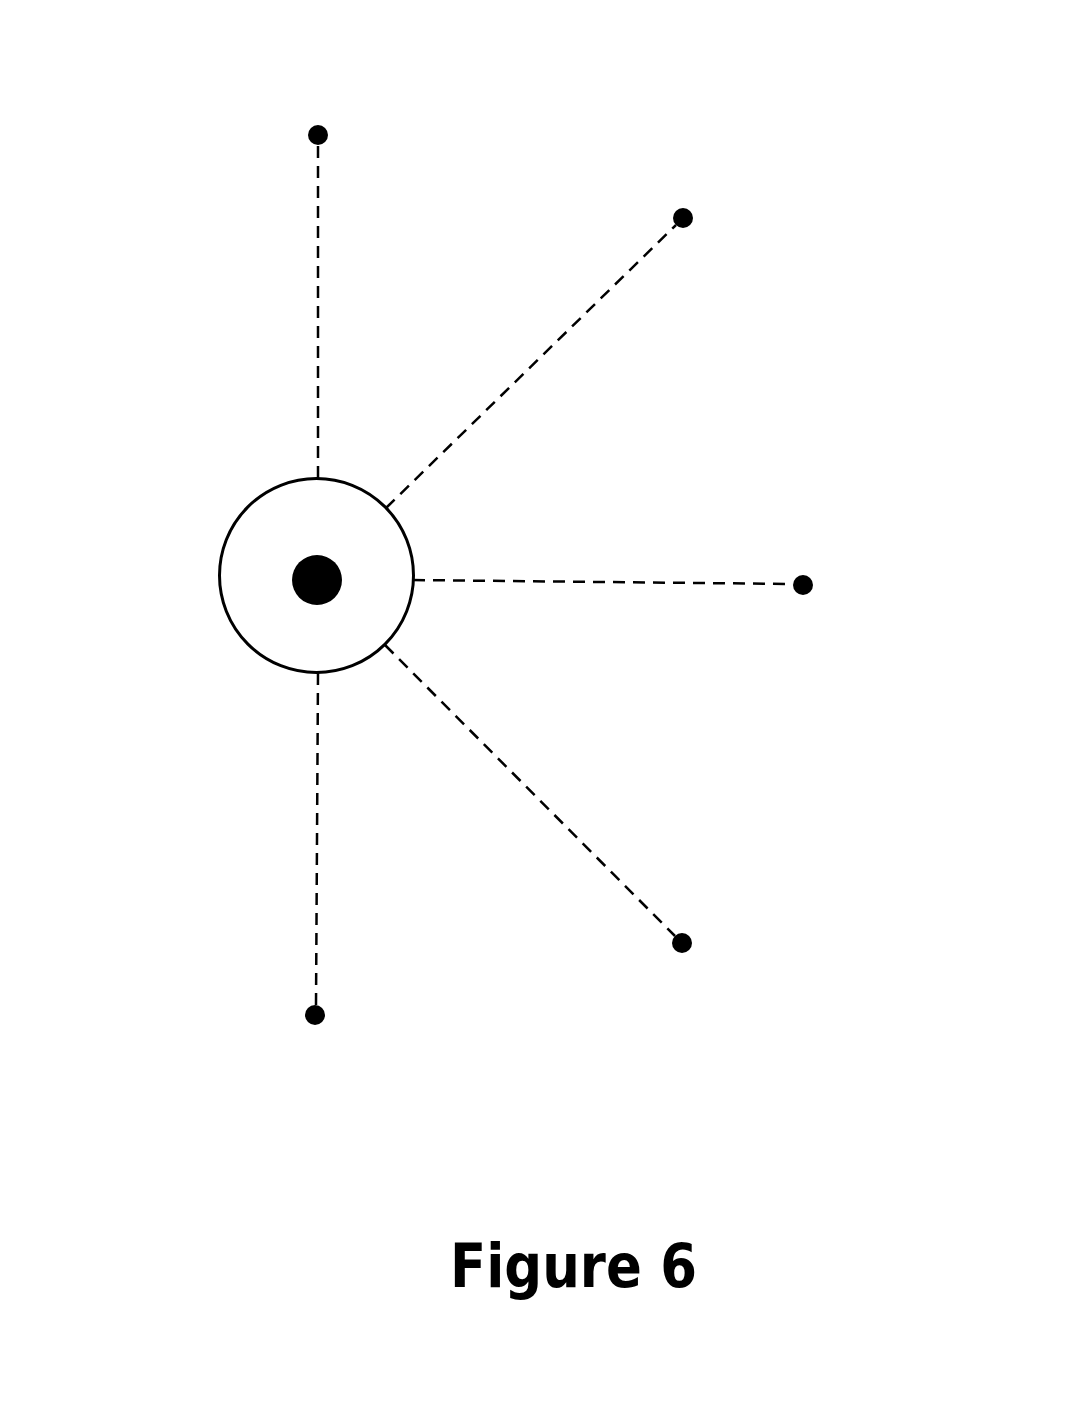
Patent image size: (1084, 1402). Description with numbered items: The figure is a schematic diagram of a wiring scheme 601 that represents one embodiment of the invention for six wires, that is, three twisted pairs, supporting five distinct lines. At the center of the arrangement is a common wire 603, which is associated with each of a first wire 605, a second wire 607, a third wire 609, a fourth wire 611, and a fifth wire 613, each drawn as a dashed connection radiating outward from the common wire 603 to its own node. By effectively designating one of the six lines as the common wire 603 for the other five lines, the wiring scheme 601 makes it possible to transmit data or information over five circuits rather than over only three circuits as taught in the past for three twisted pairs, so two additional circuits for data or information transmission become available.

The wiring scheme 601 is at (157, 82).
The common wire 603 is at (204, 596).
The first wire 605 is at (829, 585).
The second wire 607 is at (709, 943).
The third wire 609 is at (342, 1015).
The fourth wire 611 is at (343, 135).
The fifth wire 613 is at (709, 218).